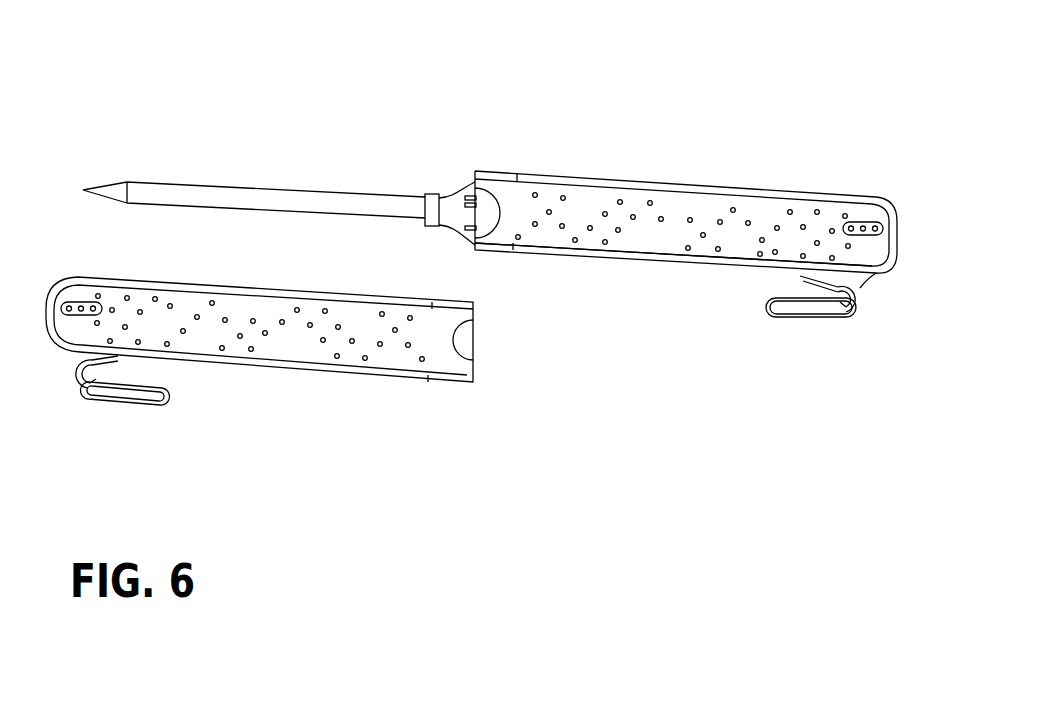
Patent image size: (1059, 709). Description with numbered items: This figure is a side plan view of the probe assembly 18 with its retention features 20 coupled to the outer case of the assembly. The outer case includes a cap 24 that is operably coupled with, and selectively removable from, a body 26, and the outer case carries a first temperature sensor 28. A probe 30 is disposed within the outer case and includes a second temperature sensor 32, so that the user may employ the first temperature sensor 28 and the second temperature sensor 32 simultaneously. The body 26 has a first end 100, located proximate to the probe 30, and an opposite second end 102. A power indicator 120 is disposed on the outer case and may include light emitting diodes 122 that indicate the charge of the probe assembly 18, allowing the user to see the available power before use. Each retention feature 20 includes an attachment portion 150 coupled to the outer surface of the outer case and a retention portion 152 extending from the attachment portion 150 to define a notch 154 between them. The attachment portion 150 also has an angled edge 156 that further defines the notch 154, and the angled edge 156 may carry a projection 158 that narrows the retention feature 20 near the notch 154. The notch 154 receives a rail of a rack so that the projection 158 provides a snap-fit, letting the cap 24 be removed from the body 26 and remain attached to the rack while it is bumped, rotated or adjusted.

The probe assembly 18 is at (586, 104).
The retention features 20 is at (866, 296).
The cap 24 is at (310, 372).
The body 26 is at (677, 187).
The first temperature sensor 28 is at (261, 330).
The probe 30 is at (250, 190).
The second temperature sensor 32 is at (110, 184).
The first end 100 is at (473, 183).
The second end 102 is at (898, 232).
The power indicator 120 is at (855, 226).
The light emitting diodes 122 is at (878, 223).
The attachment portion 150 is at (817, 272).
The retention portion 152 is at (775, 306).
The notch 154 is at (860, 304).
The angled edge 156 is at (806, 278).
The projection 158 is at (836, 297).